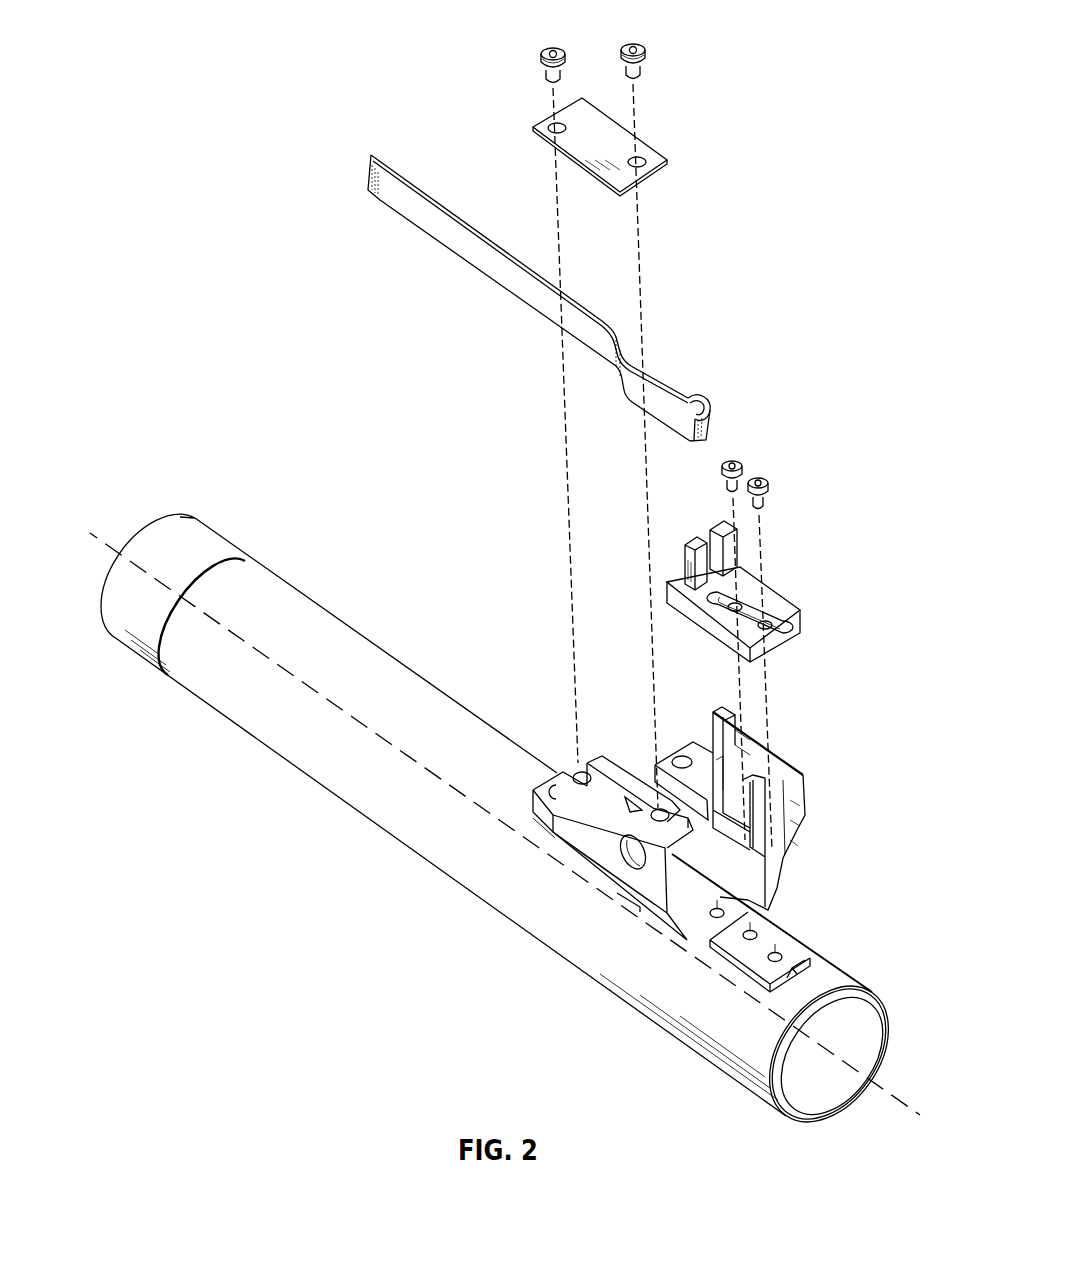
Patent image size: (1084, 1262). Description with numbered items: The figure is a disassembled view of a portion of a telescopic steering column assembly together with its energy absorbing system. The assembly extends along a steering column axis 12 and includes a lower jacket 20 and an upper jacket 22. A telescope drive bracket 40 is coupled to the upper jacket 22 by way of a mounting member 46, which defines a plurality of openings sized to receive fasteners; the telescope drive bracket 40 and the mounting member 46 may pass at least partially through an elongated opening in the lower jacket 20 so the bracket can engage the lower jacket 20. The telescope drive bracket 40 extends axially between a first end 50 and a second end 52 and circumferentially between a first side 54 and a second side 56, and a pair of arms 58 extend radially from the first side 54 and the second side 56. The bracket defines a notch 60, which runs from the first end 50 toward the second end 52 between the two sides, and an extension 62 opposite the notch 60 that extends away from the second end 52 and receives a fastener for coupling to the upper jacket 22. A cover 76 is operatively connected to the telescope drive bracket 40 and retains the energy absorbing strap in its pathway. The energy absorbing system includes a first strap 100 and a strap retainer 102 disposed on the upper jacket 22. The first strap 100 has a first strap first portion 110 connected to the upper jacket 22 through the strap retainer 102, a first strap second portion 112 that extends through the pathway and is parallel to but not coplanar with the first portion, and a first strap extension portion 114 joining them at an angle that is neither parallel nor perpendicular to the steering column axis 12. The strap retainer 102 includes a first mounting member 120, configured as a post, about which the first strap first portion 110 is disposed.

The steering column axis 12 is at (112, 538).
The upper jacket 22 is at (325, 790).
The lower jacket 20 is at (611, 889).
The telescope drive bracket 40 is at (773, 806).
The mounting member 46 is at (807, 974).
The first end 50 is at (786, 901).
The second end 52 is at (674, 749).
The first side 54 is at (728, 897).
The second side 56 is at (727, 930).
The arms 58 is at (811, 776).
The notch 60 is at (722, 928).
The extension 62 is at (546, 779).
The cover 76 is at (659, 140).
The first strap 100 is at (518, 278).
The strap retainer 102 is at (780, 651).
The first strap first portion 110 is at (697, 389).
The first strap second portion 112 is at (444, 201).
The first strap extension portion 114 is at (614, 369).
The first mounting member 120 is at (711, 527).